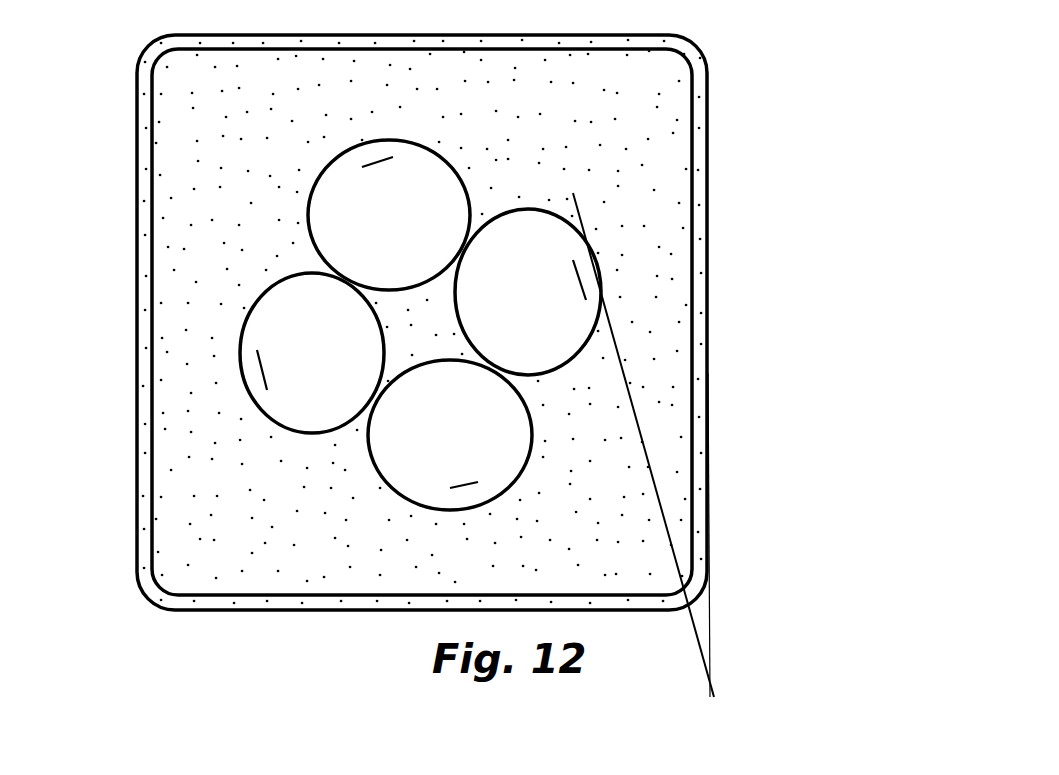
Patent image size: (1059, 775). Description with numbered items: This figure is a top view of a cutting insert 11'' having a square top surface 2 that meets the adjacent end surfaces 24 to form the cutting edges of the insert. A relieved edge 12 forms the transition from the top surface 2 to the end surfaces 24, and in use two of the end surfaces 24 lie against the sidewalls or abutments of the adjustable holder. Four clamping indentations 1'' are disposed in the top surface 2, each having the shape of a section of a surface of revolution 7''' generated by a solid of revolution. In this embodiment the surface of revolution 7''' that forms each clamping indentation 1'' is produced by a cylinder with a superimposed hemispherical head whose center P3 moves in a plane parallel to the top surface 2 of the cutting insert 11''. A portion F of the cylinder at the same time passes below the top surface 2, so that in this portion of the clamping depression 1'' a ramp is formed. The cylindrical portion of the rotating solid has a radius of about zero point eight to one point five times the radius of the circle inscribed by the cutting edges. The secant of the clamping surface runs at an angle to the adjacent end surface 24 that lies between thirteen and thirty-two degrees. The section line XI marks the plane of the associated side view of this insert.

The relieved edge 12 is at (700, 91).
The end surface 24 is at (708, 147).
The top surface 2 is at (389, 558).
The cutting insert 11'' is at (261, 641).
The clamping indentation 1'' is at (420, 324).
The surface of revolution 7''' is at (453, 318).
The portion of the cylinder F is at (378, 152).
The center of the hemispherical head P3 is at (518, 252).
The section line XI is at (170, 393).